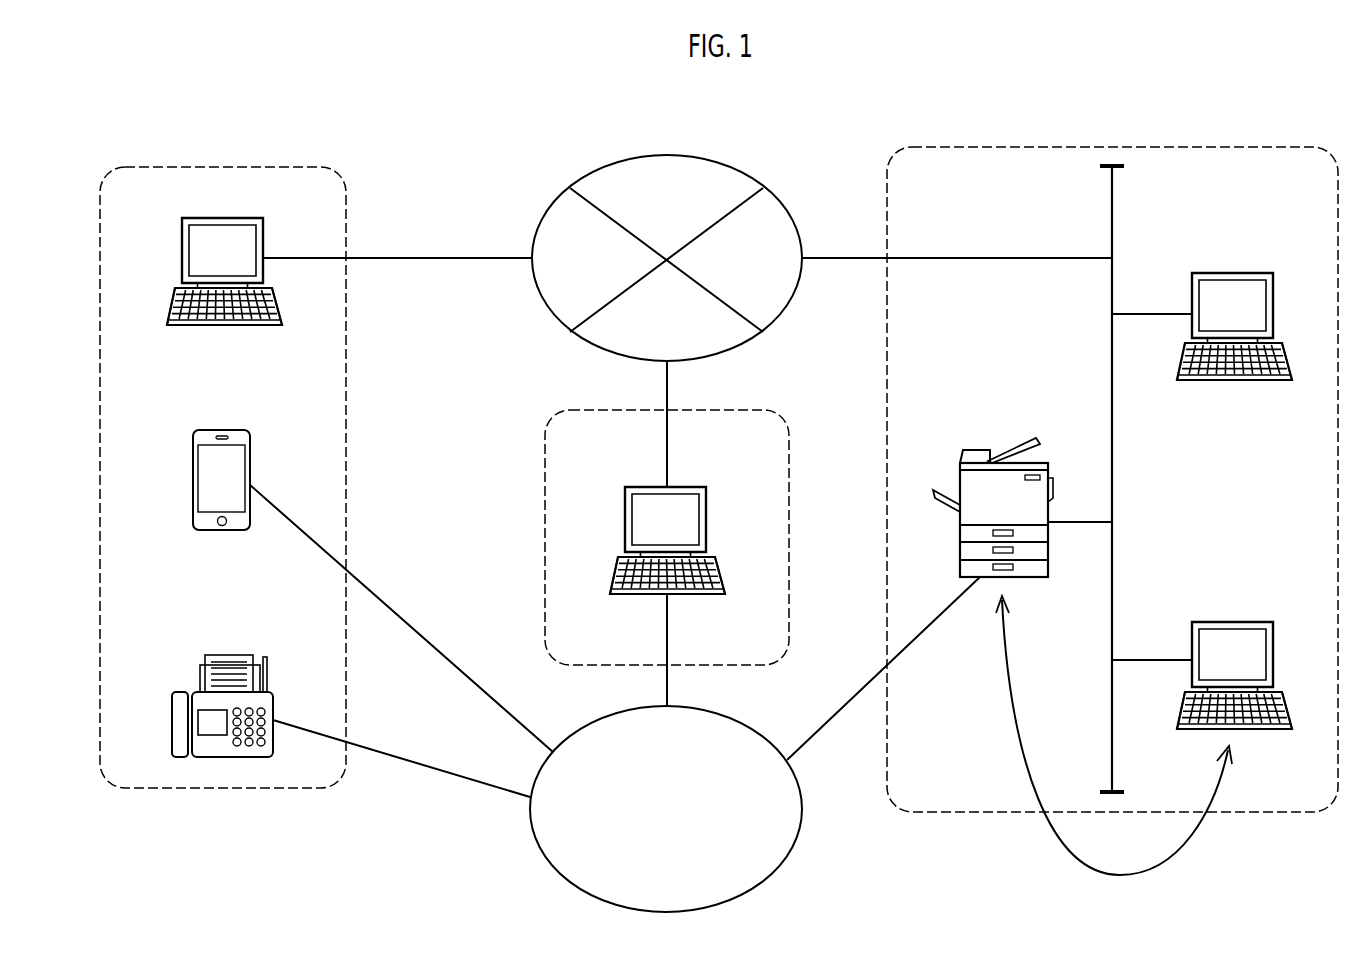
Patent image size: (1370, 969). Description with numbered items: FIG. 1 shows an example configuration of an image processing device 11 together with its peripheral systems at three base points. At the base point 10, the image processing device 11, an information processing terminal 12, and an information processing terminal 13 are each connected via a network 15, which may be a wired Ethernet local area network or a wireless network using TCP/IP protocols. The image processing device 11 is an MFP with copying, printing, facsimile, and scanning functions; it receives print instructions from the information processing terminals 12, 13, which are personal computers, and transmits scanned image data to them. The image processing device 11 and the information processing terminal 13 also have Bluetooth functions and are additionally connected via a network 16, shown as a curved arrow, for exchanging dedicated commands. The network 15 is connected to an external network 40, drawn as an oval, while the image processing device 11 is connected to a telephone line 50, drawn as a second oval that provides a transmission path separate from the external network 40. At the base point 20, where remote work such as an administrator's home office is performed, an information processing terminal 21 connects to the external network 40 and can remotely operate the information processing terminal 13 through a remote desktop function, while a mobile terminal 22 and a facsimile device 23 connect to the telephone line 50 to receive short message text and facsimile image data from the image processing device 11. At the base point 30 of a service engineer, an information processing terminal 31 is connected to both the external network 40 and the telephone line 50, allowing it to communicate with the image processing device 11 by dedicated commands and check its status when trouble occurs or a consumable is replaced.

The base point 10 is at (1283, 147).
The image processing device 11 is at (980, 448).
The information processing terminal 12 is at (1233, 273).
The information processing terminal 13 is at (1233, 622).
The network 15 is at (1113, 222).
The network 16 is at (1172, 855).
The base point 20 is at (285, 167).
The information processing terminal 21 is at (263, 232).
The mobile terminal 22 is at (235, 430).
The facsimile device 23 is at (240, 655).
The base point 30 is at (750, 410).
The information processing terminal 31 is at (690, 487).
The external network 40 is at (778, 198).
The telephone line 50 is at (800, 833).